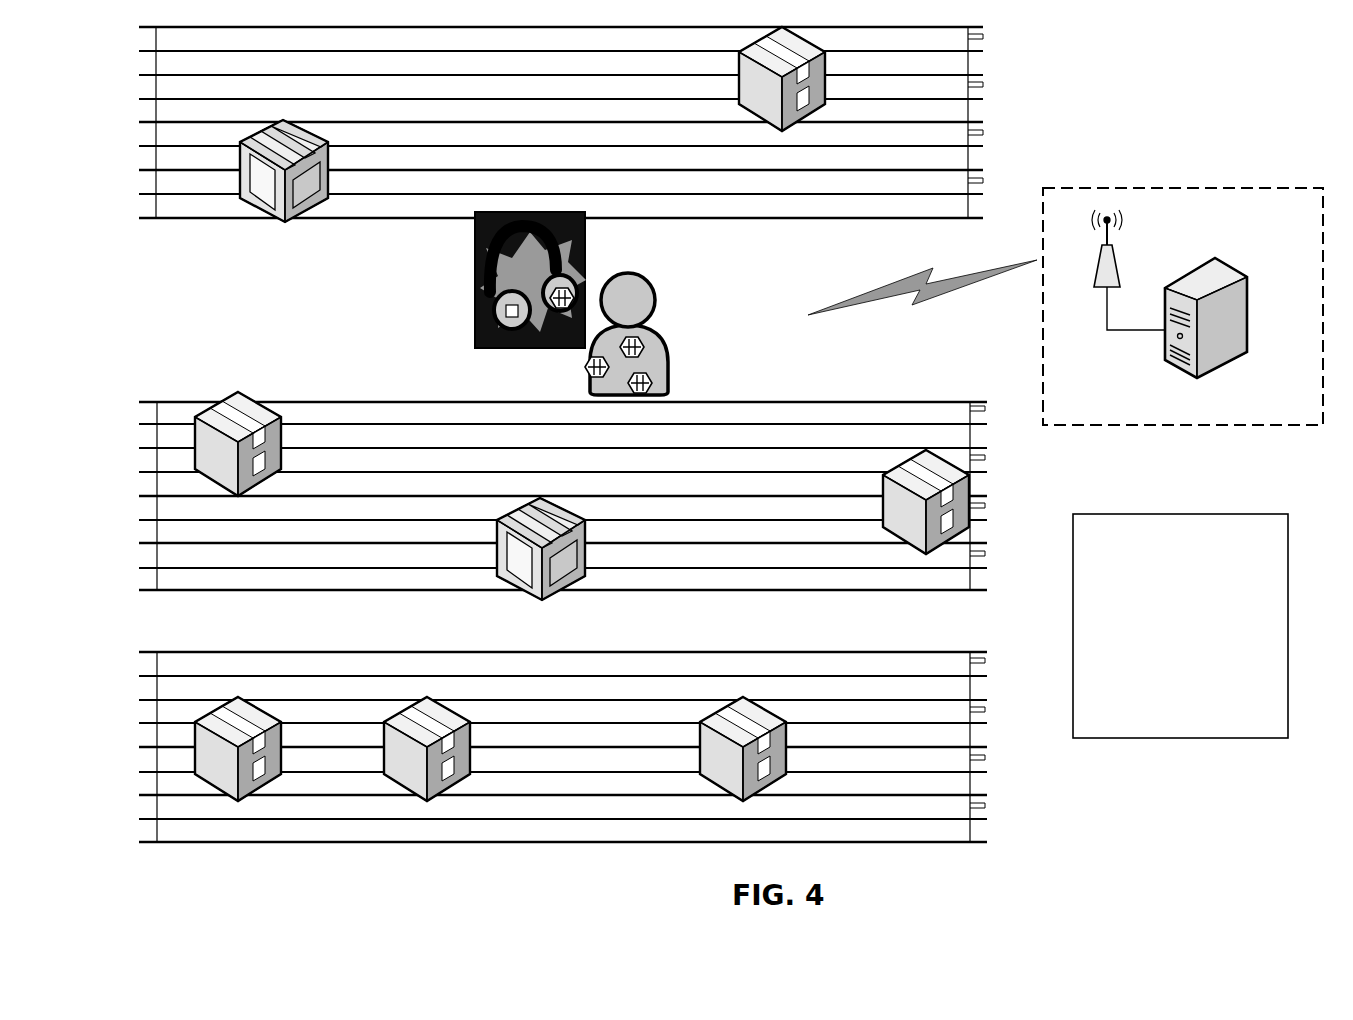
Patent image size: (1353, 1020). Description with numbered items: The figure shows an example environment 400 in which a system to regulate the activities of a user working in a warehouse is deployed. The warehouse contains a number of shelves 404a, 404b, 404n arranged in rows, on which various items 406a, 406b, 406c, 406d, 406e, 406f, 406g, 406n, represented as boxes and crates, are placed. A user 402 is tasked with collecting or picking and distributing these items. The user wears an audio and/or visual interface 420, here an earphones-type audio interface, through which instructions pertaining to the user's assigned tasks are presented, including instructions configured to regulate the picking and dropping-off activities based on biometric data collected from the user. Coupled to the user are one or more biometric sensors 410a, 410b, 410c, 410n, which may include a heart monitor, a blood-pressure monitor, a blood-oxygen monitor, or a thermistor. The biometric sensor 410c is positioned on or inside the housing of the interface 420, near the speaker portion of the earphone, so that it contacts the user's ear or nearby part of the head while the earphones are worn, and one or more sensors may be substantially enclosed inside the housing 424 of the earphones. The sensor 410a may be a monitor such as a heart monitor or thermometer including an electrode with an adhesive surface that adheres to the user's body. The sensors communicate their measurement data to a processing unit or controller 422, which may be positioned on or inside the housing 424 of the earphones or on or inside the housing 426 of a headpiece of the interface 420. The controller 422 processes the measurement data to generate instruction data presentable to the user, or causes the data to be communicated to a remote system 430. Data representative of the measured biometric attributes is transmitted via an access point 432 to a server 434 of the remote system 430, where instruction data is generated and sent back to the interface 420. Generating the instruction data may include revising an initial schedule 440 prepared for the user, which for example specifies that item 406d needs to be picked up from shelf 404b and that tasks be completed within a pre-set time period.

The environment 400 is at (1092, 140).
The user 402 is at (660, 349).
The shelf 404a is at (967, 115).
The shelf 404b is at (970, 537).
The shelf 404n is at (970, 737).
The item 406a is at (314, 141).
The item 406b is at (808, 42).
The item 406c is at (260, 395).
The item 406d is at (570, 510).
The item 406e is at (890, 468).
The item 406f is at (268, 712).
The item 406g is at (470, 718).
The item 406n is at (780, 722).
The biometric sensor 410a is at (645, 347).
The biometric sensor 410b is at (590, 378).
The biometric sensor 410c is at (577, 268).
The biometric sensor 410n is at (645, 394).
The audio and/or visual interface 420 is at (514, 304).
The processing unit/controller 422 is at (500, 330).
The housing of the earphones 424 is at (475, 345).
The housing of a headpiece 426 is at (482, 233).
The remote system 430 is at (1183, 334).
The access point 432 is at (1095, 262).
The server 434 is at (1165, 358).
The schedule 440 is at (1198, 738).